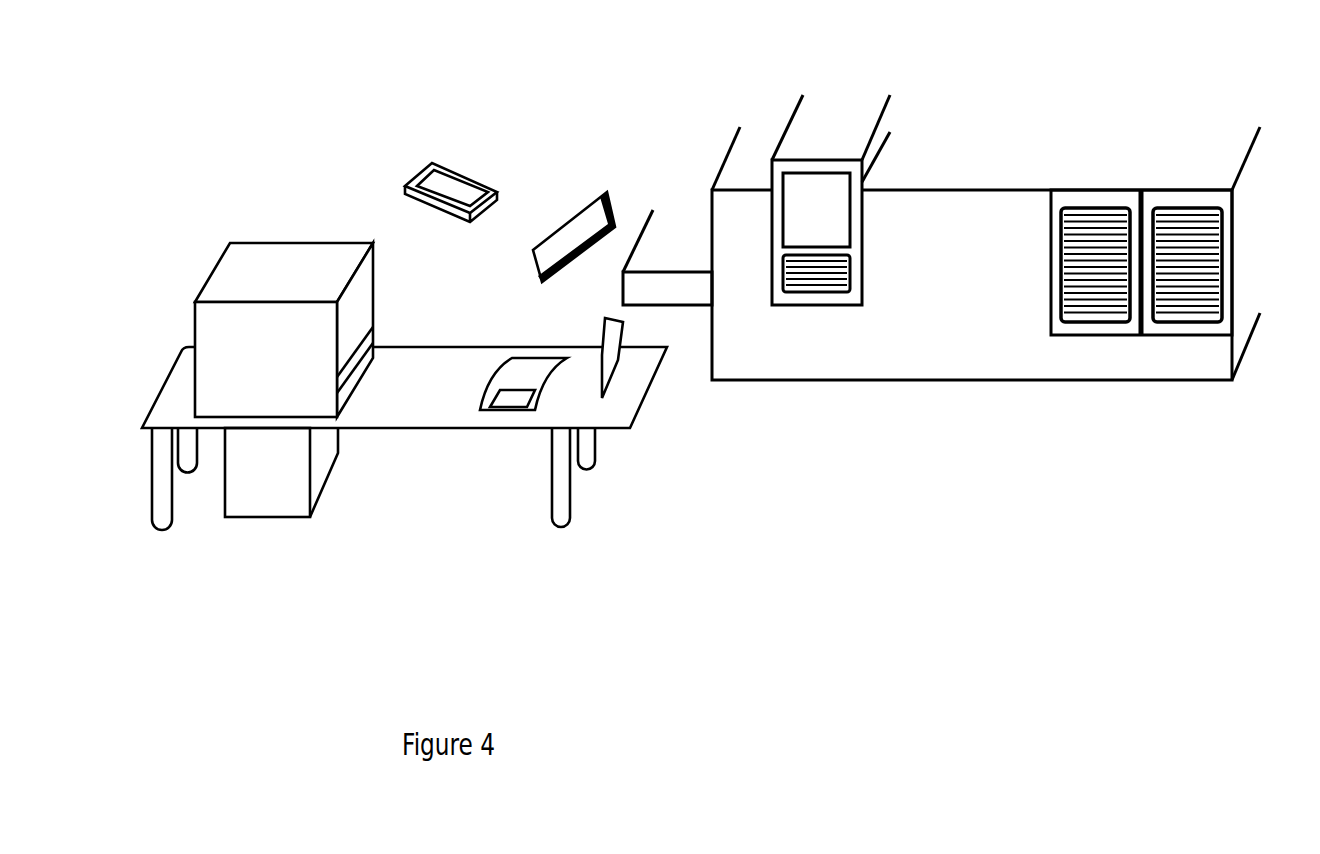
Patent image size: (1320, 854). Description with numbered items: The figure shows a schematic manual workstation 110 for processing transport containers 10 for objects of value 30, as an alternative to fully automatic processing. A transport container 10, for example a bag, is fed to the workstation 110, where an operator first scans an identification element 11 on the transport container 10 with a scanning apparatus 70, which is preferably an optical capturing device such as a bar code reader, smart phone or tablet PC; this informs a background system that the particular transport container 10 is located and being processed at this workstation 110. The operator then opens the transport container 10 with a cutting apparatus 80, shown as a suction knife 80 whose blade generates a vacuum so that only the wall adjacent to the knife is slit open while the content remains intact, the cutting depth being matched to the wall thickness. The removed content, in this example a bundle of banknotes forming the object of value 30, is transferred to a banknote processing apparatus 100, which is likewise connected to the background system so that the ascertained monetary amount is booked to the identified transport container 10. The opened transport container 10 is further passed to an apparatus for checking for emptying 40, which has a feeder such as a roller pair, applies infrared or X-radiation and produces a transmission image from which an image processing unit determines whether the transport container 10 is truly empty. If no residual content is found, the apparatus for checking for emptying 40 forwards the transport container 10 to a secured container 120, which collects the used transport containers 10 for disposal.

The transport container 10 is at (512, 413).
The identification element 11 is at (488, 405).
The object of value 30 is at (602, 184).
The apparatus for checking for emptying 40 is at (245, 220).
The scanning apparatus 70 is at (465, 172).
The cutting apparatus (suction knife) 80 is at (615, 367).
The banknote processing apparatus 100 is at (917, 390).
The workstation 110 is at (367, 153).
The secured container 120 is at (225, 513).